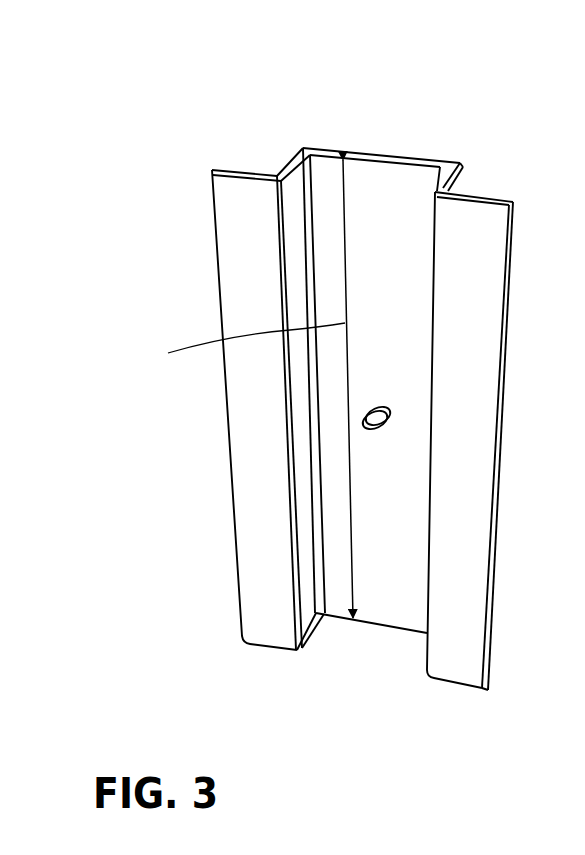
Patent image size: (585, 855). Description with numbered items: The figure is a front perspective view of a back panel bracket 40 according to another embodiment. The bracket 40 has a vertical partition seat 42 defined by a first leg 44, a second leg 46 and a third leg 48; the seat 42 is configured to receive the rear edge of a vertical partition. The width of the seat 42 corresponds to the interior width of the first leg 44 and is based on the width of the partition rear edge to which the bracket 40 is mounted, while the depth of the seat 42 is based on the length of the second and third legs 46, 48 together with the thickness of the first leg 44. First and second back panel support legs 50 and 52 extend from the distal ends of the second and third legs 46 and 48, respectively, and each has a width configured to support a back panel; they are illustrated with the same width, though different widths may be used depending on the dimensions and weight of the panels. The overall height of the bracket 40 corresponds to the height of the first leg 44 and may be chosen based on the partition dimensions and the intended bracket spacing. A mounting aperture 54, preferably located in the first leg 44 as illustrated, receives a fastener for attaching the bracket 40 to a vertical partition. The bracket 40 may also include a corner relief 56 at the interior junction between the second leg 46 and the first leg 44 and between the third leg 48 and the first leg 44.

The bracket 40 is at (225, 128).
The vertical partition seat 42 is at (385, 206).
The first leg 44 is at (392, 600).
The second leg 46 is at (283, 166).
The third leg 48 is at (460, 185).
The first back panel support leg 50 is at (237, 197).
The second back panel support leg 52 is at (482, 248).
The mounting aperture 54 is at (390, 408).
The corner relief 56 is at (575, 515).